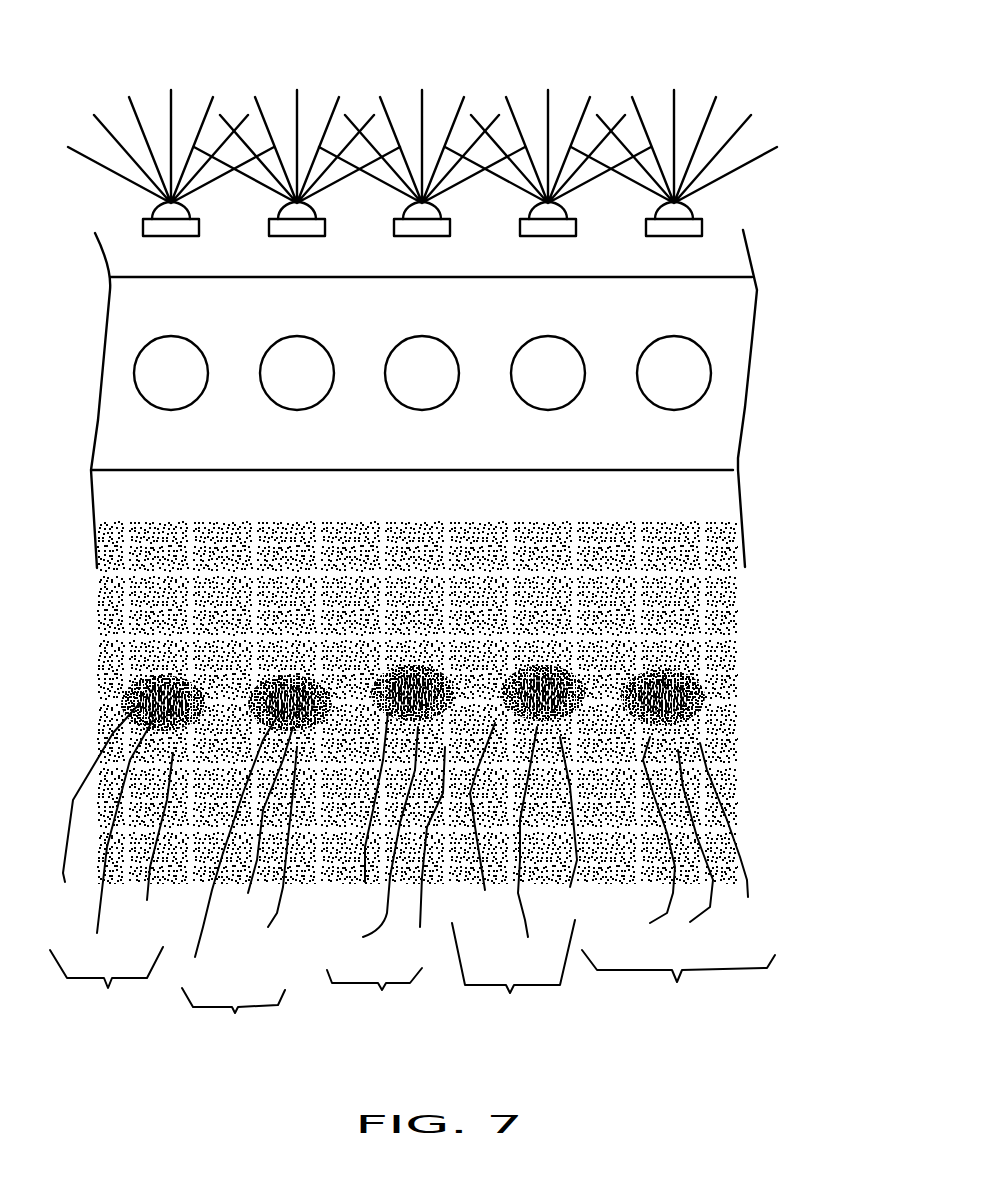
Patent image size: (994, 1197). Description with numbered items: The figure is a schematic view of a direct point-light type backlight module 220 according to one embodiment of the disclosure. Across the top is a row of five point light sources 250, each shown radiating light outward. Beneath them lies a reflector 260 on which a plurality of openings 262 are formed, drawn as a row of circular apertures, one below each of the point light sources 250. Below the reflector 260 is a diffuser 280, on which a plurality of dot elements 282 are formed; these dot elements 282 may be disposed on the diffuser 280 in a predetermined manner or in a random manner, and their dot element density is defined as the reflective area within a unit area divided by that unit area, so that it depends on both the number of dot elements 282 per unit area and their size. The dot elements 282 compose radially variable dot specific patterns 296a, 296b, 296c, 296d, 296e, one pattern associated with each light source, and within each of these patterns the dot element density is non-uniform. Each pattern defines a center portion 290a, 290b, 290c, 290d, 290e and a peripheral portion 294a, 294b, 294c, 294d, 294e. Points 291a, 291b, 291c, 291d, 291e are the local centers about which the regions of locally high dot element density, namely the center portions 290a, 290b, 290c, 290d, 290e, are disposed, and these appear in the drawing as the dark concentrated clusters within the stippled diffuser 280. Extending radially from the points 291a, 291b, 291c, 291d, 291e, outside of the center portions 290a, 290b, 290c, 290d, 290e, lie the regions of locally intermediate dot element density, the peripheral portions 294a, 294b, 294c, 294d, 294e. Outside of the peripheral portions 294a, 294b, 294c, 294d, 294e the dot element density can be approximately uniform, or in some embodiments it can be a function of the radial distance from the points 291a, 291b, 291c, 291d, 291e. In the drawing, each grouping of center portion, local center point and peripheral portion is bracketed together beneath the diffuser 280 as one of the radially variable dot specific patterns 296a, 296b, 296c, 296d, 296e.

The direct point-light type backlight module 220 is at (98, 43).
The point light sources 250 is at (701, 224).
The reflector 260 is at (742, 340).
The openings 262 is at (690, 388).
The diffuser 280 is at (479, 677).
The dot elements 282 is at (317, 531).
The center portion 290a is at (636, 846).
The center portion 290b is at (567, 827).
The center portion 290c is at (353, 814).
The center portion 290d is at (251, 825).
The center portion 290e is at (87, 810).
The point 291a is at (703, 852).
The point 291b is at (524, 847).
The point 291c is at (367, 847).
The point 291d is at (263, 854).
The point 291e is at (125, 860).
The peripheral portion 294a is at (741, 835).
The peripheral portion 294b is at (480, 823).
The peripheral portion 294c is at (414, 853).
The peripheral portion 294d is at (226, 847).
The peripheral portion 294e is at (137, 826).
The radially variable dot specific pattern 296a is at (678, 985).
The radially variable dot specific pattern 296b is at (513, 975).
The radially variable dot specific pattern 296c is at (374, 995).
The radially variable dot specific pattern 296d is at (233, 1015).
The radially variable dot specific pattern 296e is at (106, 986).